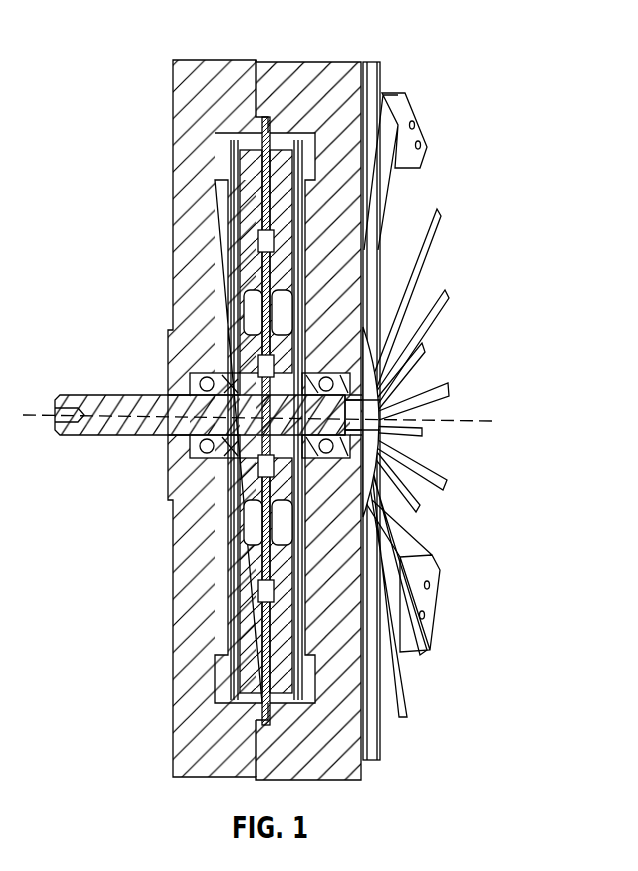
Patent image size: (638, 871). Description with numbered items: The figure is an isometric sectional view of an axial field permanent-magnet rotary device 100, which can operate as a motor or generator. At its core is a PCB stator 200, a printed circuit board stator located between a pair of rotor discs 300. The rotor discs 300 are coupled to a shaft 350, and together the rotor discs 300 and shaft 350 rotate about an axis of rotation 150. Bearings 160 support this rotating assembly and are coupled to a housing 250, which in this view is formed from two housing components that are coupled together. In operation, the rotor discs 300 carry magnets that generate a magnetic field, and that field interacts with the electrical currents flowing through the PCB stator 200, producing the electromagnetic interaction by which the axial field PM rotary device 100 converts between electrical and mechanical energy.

The axial field PM rotary device 100 is at (467, 41).
The axis of rotation 150 is at (474, 422).
The bearings 160 is at (340, 468).
The PCB stator 200 is at (258, 238).
The housing 250 is at (193, 87).
The rotor discs 300 is at (253, 234).
The shaft 350 is at (122, 393).